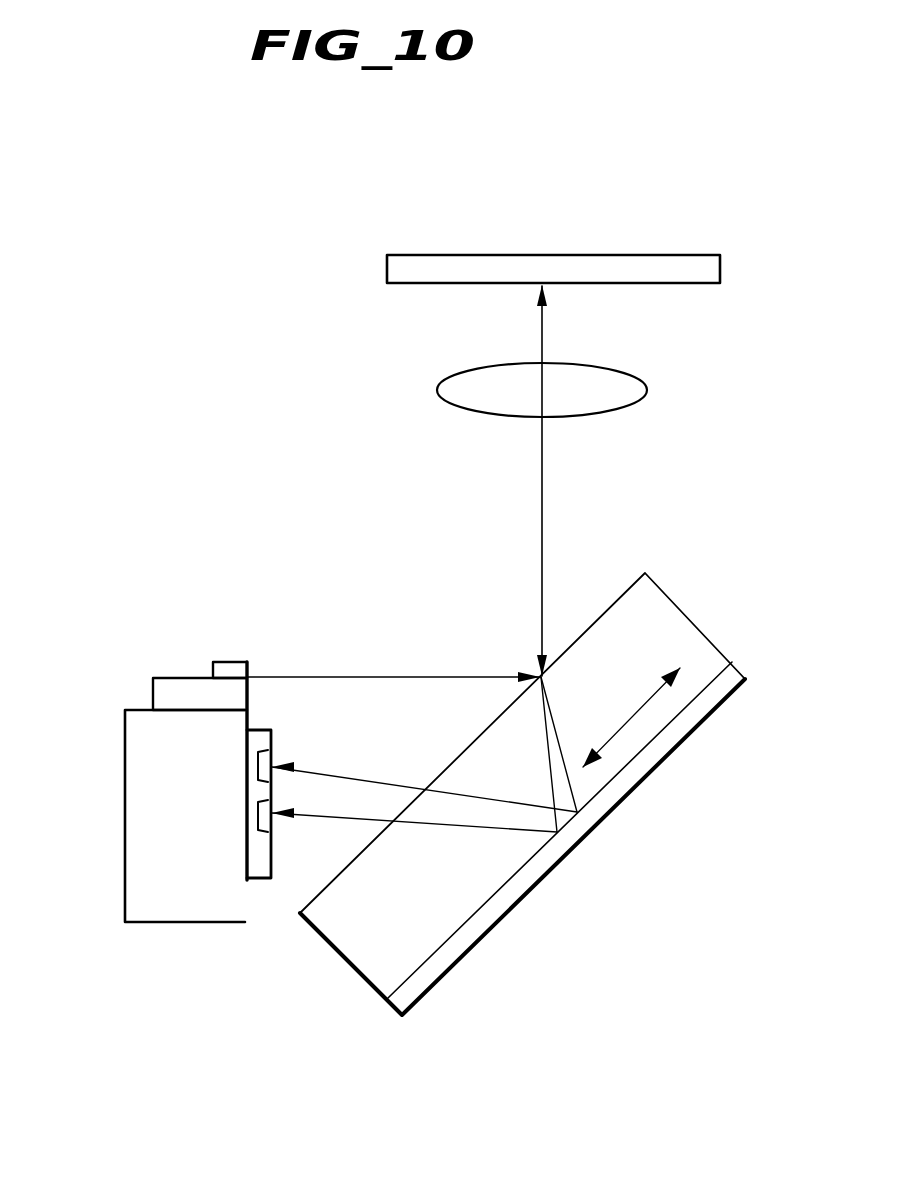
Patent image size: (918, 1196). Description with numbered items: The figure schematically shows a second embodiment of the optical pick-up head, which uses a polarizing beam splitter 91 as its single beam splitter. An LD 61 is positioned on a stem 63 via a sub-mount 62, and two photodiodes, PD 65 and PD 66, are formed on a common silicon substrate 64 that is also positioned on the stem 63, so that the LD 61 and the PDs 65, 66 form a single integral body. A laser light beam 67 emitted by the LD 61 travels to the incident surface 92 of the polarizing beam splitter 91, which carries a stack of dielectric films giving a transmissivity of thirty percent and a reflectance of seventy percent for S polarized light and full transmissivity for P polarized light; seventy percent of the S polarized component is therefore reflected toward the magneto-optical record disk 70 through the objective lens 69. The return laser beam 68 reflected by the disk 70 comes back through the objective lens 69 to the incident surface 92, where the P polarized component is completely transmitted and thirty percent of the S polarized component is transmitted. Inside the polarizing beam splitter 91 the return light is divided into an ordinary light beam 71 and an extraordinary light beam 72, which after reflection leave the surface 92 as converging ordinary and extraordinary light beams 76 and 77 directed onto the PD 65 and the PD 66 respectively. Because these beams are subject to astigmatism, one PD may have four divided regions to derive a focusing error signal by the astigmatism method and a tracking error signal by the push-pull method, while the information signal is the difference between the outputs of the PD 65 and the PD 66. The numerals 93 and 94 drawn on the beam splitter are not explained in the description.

The LD 61 is at (235, 662).
The sub-mount 62 is at (180, 678).
The stem 63 is at (127, 898).
The silicon substrate 64 is at (258, 868).
The photodiode (PD) 65 is at (270, 820).
The photodiode (PD) 66 is at (273, 751).
The laser light beam 67 is at (419, 673).
The return laser beam 68 is at (540, 517).
The objective lens 69 is at (640, 373).
The magneto-optical record disk 70 is at (722, 272).
The ordinary light beam 71 is at (546, 742).
The extraordinary light beam 72 is at (570, 782).
The ordinary light beam 76 is at (522, 832).
The extraordinary light beam 77 is at (472, 785).
The polarizing beam splitter 91 is at (674, 648).
The incident surface 92 is at (622, 594).
The reflective layer 93 is at (462, 960).
The reflecting surface 94 is at (487, 923).